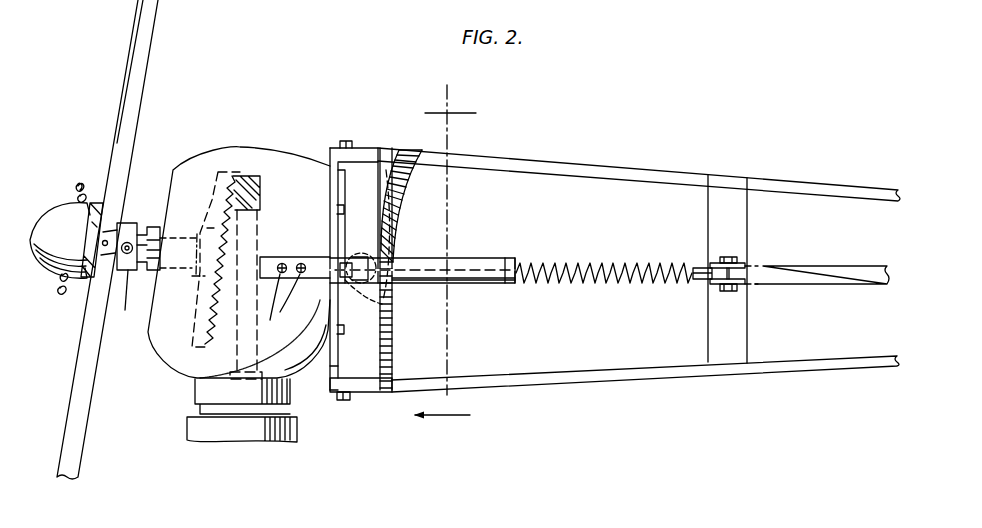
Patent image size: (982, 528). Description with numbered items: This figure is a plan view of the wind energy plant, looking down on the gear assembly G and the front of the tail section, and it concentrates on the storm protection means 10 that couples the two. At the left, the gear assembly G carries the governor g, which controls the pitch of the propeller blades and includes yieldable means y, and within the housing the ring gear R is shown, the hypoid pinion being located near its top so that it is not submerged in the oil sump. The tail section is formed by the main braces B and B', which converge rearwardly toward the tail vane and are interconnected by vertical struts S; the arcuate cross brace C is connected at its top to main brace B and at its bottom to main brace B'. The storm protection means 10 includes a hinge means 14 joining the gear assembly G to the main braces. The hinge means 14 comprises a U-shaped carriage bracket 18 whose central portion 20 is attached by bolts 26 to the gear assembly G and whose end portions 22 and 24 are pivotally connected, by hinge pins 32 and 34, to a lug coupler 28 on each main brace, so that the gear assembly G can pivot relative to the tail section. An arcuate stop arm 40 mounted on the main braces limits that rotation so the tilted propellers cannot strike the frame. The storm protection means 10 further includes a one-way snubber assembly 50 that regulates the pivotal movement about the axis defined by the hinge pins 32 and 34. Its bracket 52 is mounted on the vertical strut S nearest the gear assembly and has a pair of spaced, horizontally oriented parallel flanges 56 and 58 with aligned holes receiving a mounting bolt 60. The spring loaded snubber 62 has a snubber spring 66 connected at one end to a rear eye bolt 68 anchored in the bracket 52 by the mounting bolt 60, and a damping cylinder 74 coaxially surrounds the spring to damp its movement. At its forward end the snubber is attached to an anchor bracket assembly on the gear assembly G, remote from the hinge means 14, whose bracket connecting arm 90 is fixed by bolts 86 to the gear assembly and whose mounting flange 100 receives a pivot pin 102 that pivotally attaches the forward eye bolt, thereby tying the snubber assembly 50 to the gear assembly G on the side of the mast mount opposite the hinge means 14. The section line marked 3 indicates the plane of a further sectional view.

The yieldable means y is at (72, 183).
The ring gear R is at (218, 168).
The gear assembly G is at (248, 145).
The governor g is at (267, 190).
The hinge means 14 is at (326, 165).
The lug coupler 28 is at (336, 148).
The hinge pin 32 is at (346, 141).
The end portion 22 is at (358, 222).
The bolts 26 is at (342, 212).
The bracket connecting arm 90 is at (287, 252).
The mounting flange 100 is at (348, 262).
The bolts 86 is at (280, 308).
The central portion 20 is at (333, 307).
The stop arm 40 is at (413, 193).
The arcuate cross brace C is at (389, 229).
The pivot pin 102 is at (388, 305).
The damping cylinder 74 is at (447, 268).
The one-way snubber assembly 50 is at (505, 254).
The spring loaded snubber 62 is at (487, 286).
The snubber spring 66 is at (583, 264).
The rear eye bolt 68 is at (703, 279).
The flange 58 is at (713, 266).
The mounting bolt 60 is at (733, 262).
The flange 56 is at (737, 292).
The bracket 52 is at (712, 290).
The vertical struts S is at (733, 243).
The main brace B is at (639, 162).
The main brace B' is at (645, 395).
The end portion 24 is at (350, 380).
The hinge pin 34 is at (346, 400).
The U-shaped carriage bracket 18 is at (329, 372).
The storm protection means 10 is at (339, 414).
The section line 3- 3 is at (445, 264).